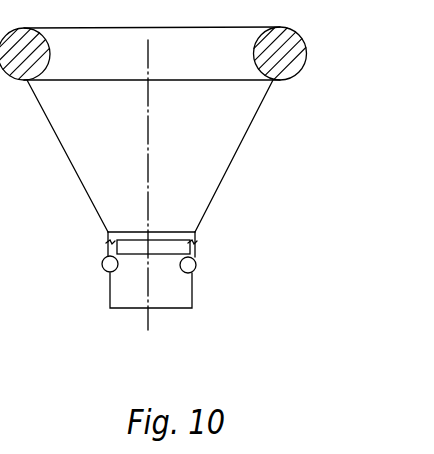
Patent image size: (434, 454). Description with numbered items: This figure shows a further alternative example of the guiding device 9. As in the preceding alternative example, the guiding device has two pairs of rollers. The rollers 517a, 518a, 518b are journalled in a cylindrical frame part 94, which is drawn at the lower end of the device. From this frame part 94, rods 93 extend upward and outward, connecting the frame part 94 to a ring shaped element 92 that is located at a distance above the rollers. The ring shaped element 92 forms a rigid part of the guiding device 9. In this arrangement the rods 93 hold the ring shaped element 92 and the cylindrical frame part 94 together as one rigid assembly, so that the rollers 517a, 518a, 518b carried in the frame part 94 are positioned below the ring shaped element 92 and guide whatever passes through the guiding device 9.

The guiding device 9 is at (283, 324).
The ring shaped element 92 is at (300, 67).
The rods 93 is at (248, 126).
The cylindrical frame part 94 is at (193, 294).
The roller 517a is at (192, 244).
The roller 518a is at (108, 266).
The roller 518b is at (190, 266).